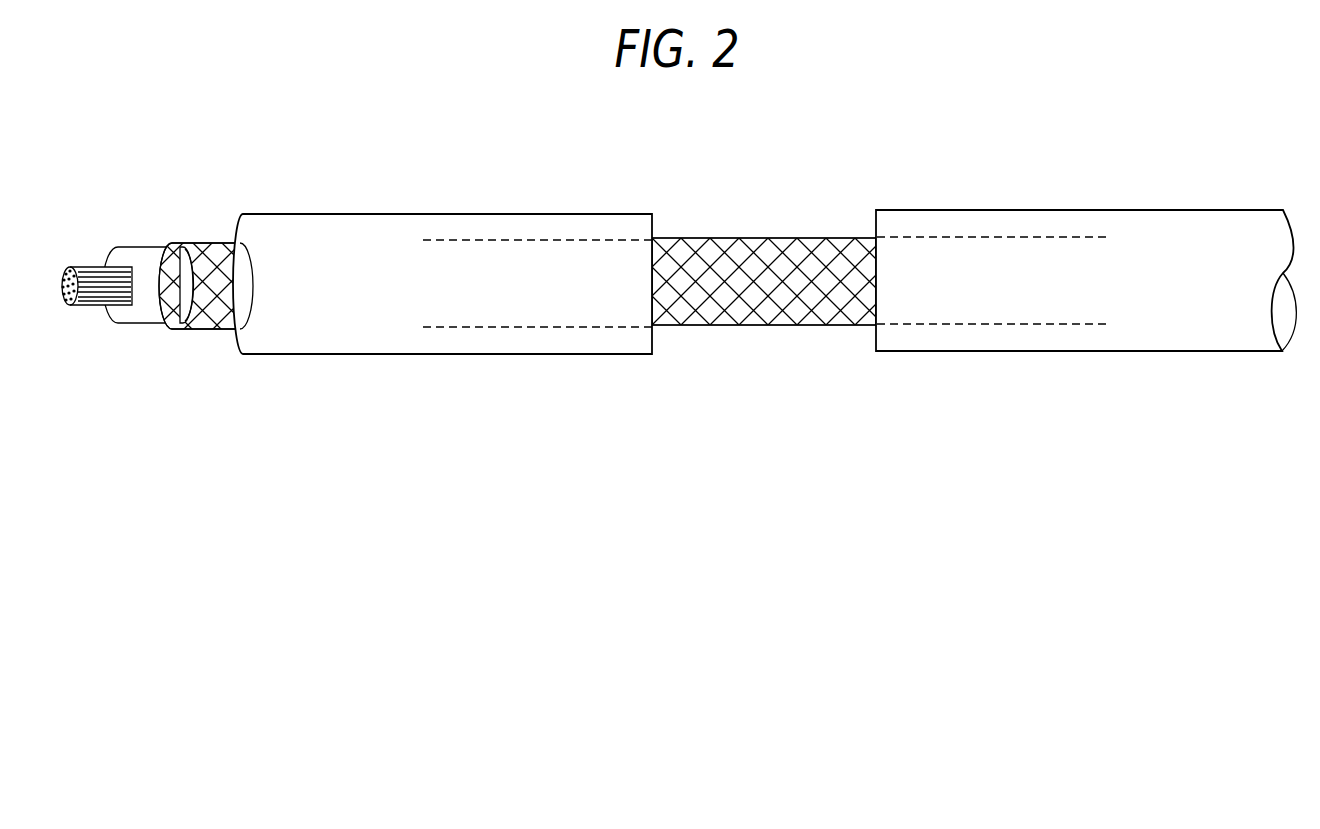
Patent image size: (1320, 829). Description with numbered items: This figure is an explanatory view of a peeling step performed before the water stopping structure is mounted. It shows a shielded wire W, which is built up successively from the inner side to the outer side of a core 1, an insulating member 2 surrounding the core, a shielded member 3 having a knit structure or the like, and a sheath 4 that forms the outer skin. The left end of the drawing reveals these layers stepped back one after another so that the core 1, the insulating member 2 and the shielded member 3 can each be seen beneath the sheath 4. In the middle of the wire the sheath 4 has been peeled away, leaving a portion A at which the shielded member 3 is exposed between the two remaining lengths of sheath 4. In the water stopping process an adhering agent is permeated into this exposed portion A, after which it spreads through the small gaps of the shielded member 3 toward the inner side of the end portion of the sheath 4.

The core 1 is at (82, 307).
The insulating member 2 is at (140, 323).
The shielded member 3 is at (197, 330).
The sheath 4 is at (278, 355).
The portion at which the shielded member is exposed A is at (747, 337).
The shielded wire W is at (1078, 194).